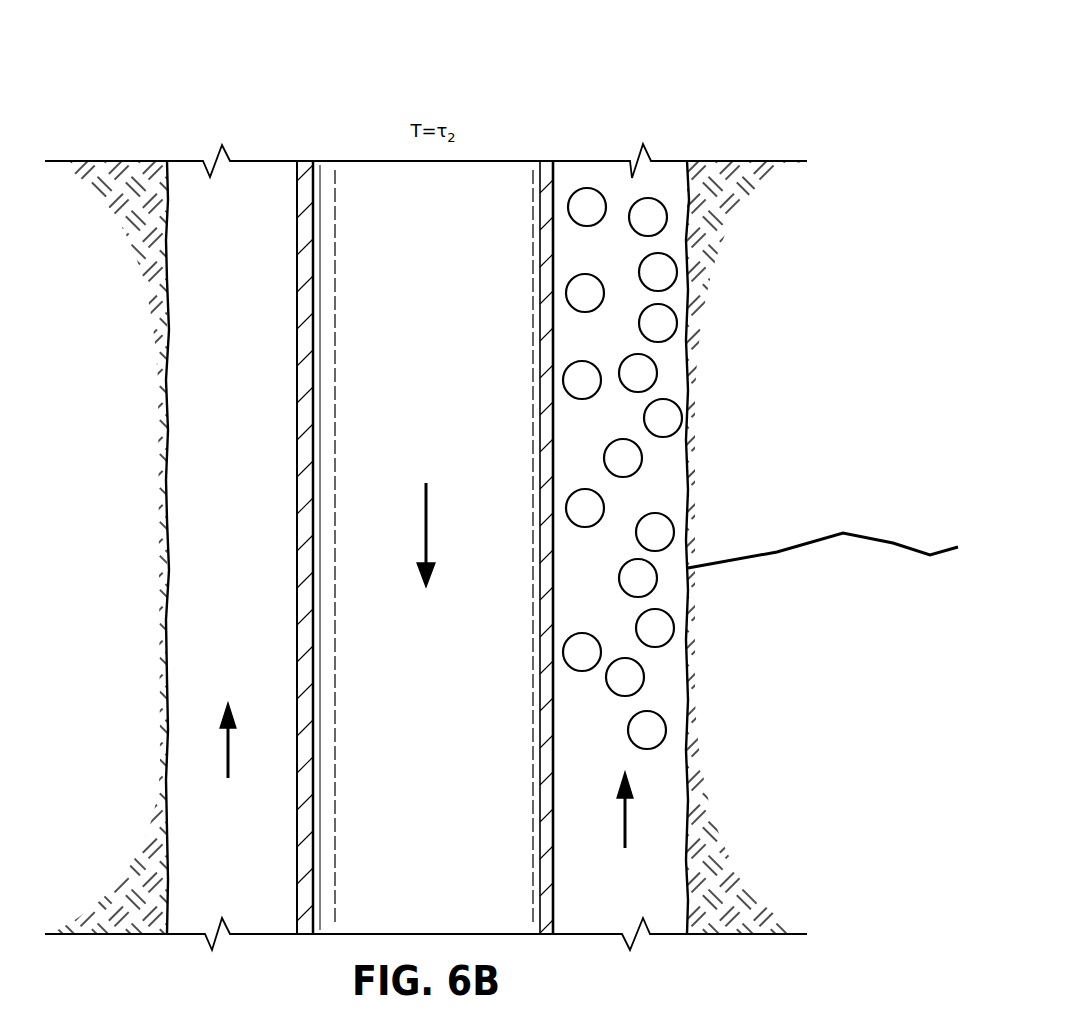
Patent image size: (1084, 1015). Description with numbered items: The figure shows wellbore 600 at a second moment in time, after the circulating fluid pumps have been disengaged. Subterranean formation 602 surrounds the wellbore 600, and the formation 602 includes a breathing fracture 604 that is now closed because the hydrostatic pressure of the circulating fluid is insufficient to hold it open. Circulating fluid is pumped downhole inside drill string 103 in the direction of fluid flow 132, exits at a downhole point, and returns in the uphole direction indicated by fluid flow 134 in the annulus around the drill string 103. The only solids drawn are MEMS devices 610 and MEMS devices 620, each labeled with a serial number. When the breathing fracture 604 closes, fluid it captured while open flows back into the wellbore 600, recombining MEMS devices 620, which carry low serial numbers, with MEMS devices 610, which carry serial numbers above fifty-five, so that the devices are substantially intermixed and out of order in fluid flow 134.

The wellbore 600 is at (284, 85).
The subterranean formation 602 is at (813, 237).
The breathing fracture 604 is at (885, 540).
The MEMS devices 610 is at (640, 326).
The MEMS devices 620 is at (633, 201).
The drill string 103 is at (307, 340).
The fluid flow 132 is at (424, 521).
The fluid flow 134 is at (230, 748).